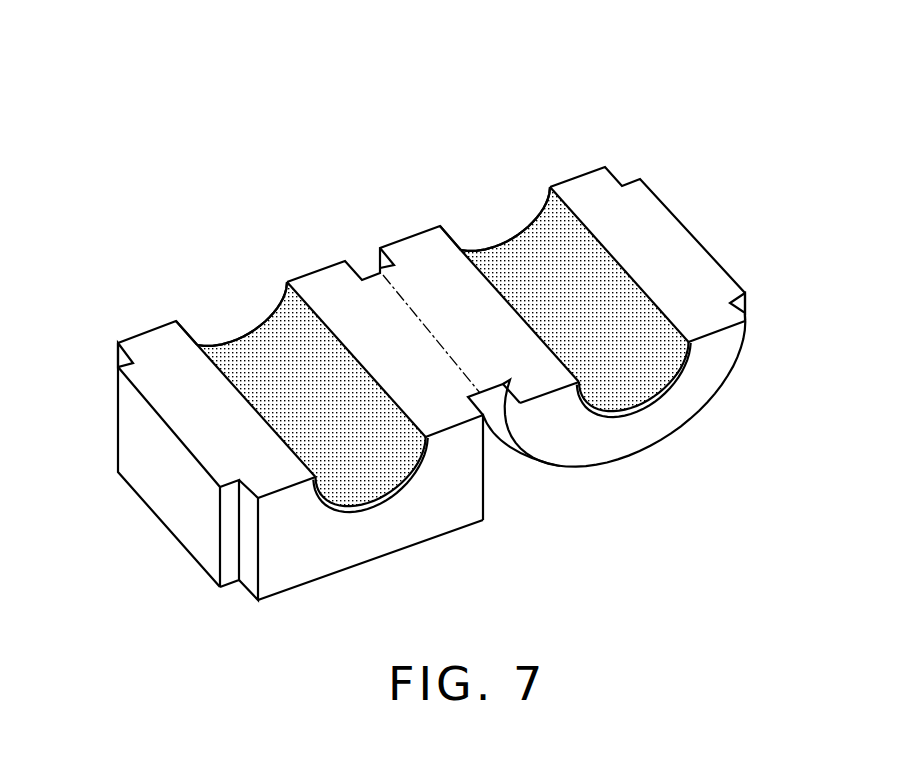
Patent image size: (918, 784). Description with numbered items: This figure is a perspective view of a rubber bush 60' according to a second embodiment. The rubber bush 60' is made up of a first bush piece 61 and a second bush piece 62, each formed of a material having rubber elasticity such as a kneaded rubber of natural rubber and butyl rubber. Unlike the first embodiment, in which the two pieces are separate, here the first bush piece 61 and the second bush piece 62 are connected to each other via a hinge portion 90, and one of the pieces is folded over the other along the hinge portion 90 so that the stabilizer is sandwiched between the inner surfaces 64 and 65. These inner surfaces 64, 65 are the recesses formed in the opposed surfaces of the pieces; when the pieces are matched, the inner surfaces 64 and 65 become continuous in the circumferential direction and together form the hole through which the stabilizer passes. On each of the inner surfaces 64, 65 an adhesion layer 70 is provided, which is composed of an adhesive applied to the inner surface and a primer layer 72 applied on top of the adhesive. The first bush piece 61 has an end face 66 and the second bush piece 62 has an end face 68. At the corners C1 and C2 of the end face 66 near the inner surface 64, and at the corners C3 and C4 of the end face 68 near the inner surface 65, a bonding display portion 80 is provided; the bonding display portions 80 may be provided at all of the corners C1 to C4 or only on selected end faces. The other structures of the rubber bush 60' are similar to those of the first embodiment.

The rubber bush 60' is at (450, 354).
The first bush piece 61 is at (175, 508).
The second bush piece 62 is at (733, 372).
The inner surface 64 is at (235, 383).
The inner surface 65 is at (498, 288).
The end face 66 is at (311, 557).
The end face 68 is at (630, 442).
The adhesion layer 70 is at (333, 377).
The primer layer 72 is at (273, 403).
The bonding display portion 80 is at (387, 507).
The hinge portion 90 is at (417, 310).
The corner C1 is at (407, 486).
The corner C2 is at (257, 328).
The corner C3 is at (645, 412).
The corner C4 is at (513, 228).